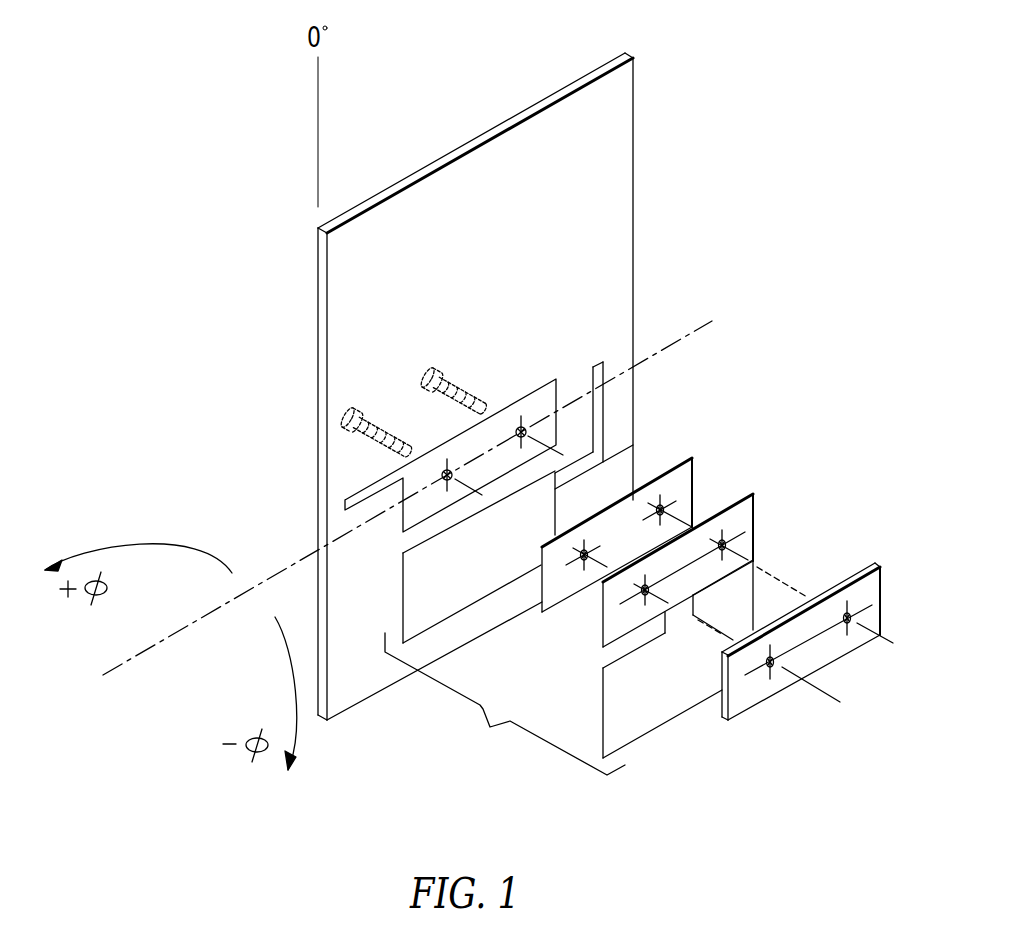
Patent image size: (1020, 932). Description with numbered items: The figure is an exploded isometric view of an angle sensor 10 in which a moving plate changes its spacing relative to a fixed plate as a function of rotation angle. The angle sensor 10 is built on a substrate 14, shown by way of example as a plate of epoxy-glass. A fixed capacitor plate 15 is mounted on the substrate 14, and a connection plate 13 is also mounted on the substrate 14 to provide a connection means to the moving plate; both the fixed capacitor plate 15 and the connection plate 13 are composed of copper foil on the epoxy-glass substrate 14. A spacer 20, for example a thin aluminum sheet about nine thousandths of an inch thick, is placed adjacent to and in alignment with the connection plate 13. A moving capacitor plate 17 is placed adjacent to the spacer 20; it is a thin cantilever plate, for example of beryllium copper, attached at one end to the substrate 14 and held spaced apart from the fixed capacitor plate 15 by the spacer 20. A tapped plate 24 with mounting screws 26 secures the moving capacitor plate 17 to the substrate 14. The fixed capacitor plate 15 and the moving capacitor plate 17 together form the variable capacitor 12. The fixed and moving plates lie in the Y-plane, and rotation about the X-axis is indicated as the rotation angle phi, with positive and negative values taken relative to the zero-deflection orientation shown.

The angle sensor 10 is at (586, 69).
The variable capacitor 12 is at (505, 704).
The connection plate 13 is at (547, 400).
The substrate 14 is at (617, 228).
The fixed capacitor plate 15 is at (416, 606).
The moving capacitor plate 17 is at (650, 712).
The spacer 20 is at (688, 485).
The tapped plate 24 is at (858, 587).
The mounting screws 26 is at (413, 376).